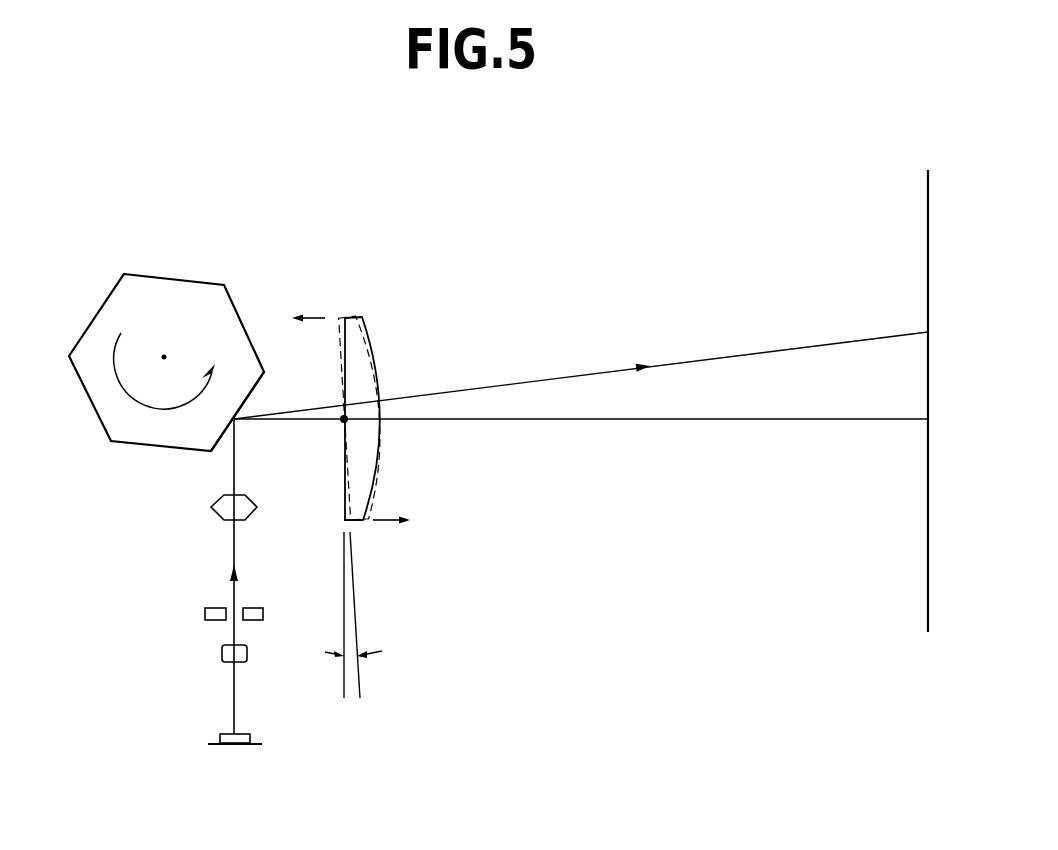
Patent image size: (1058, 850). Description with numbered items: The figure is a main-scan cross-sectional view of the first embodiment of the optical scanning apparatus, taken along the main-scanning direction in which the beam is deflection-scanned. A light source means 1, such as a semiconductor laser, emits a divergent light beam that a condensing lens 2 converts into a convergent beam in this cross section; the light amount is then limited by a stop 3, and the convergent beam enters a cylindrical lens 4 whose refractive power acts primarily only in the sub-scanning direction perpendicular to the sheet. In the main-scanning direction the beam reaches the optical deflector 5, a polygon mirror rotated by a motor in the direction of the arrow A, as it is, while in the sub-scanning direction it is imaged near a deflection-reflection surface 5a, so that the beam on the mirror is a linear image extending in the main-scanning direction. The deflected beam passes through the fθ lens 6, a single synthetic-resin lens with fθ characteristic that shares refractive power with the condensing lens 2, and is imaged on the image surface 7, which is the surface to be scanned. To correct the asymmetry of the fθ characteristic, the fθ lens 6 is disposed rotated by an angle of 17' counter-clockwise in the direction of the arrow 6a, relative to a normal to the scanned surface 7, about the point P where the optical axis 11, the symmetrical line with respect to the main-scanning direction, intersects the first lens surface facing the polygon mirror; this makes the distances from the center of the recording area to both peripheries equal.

The light source means 1 is at (242, 747).
The condensing lens 2 is at (247, 657).
The stop 3 is at (263, 613).
The cylindrical lens 4 is at (212, 517).
The optical deflector 5 is at (115, 428).
The deflection-reflection surface 5a is at (222, 428).
The fθ lens 6 is at (355, 317).
The arrow indicating rotation direction of fθ lens 6a is at (373, 409).
The image surface 7 is at (928, 257).
The optical axis 11 is at (502, 420).
The rotation angle of fθ lens 17' is at (375, 615).
The arrow indicating rotation direction of polygon mirror A is at (120, 373).
The rotation center point P is at (330, 438).